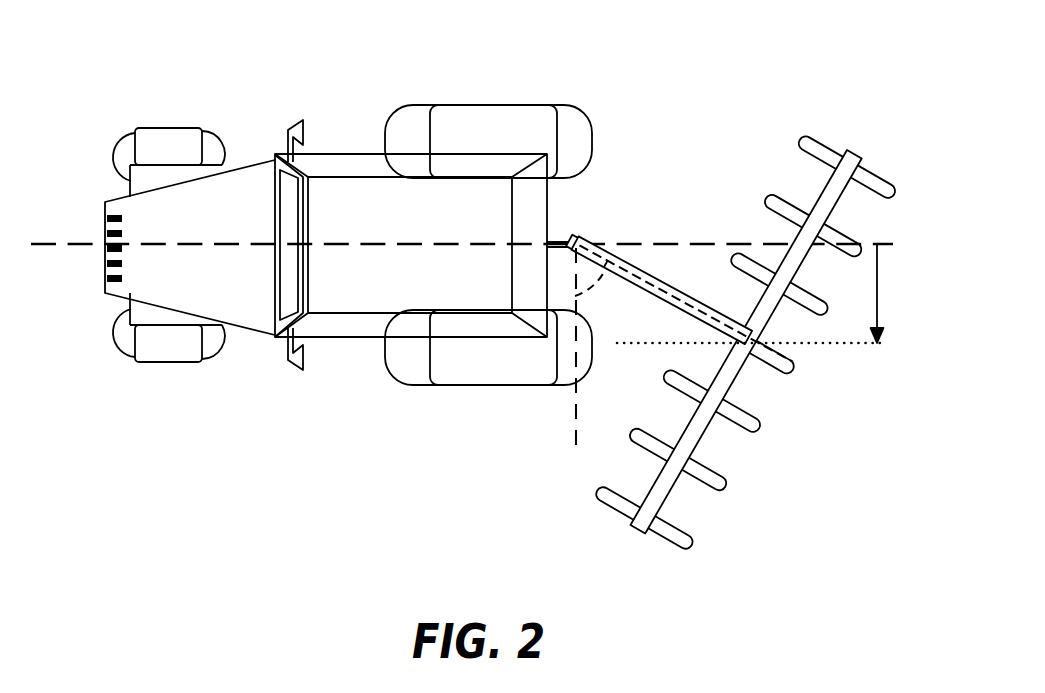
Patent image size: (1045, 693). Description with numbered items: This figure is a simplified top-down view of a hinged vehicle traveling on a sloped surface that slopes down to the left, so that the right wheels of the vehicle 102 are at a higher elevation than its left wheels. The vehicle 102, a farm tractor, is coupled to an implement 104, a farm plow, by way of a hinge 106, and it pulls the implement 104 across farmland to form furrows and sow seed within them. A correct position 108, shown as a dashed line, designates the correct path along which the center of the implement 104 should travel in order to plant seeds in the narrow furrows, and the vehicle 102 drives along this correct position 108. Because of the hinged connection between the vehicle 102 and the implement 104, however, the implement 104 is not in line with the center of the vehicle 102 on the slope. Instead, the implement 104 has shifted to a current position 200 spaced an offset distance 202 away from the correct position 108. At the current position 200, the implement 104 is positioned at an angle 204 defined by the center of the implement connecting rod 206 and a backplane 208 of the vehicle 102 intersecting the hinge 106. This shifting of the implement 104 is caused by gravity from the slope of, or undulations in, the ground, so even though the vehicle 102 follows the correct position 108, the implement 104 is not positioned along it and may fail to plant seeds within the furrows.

The vehicle 102 is at (355, 210).
The implement 104 is at (640, 527).
The hinge 106 is at (573, 238).
The correct position 108 is at (78, 242).
The current position 200 is at (829, 343).
The offset distance 202 is at (878, 294).
The angle 204 is at (596, 278).
The implement connecting rod 206 is at (635, 263).
The backplane 208 is at (575, 401).